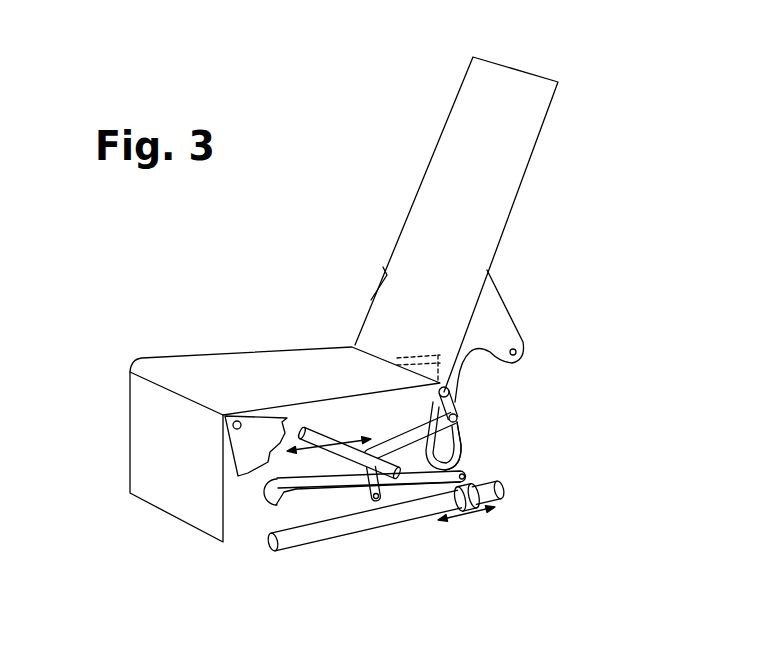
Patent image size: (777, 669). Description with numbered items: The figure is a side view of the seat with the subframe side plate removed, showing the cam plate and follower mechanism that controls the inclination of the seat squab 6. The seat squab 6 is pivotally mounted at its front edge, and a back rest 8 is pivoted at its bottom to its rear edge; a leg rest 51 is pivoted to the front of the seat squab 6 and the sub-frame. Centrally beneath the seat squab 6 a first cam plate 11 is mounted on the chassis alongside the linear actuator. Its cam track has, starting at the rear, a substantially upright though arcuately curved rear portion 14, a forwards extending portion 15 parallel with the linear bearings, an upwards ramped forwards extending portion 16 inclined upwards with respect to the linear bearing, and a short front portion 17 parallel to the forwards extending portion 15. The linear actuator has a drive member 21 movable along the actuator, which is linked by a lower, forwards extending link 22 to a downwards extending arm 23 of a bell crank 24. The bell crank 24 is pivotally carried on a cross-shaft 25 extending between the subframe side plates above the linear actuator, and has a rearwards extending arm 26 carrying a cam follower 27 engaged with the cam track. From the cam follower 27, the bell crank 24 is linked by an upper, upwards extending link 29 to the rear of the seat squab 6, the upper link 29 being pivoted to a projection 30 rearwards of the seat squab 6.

The back rest 8 is at (482, 163).
The projection 30 is at (420, 350).
The seat squab 6 is at (264, 378).
The leg rest 51 is at (168, 490).
The cross-shaft 25 is at (303, 437).
The rearwards extending arm 26 is at (402, 442).
The bell crank 24 is at (372, 418).
The downwards extending arm 23 is at (364, 493).
The short front portion 17 is at (273, 507).
The upwards ramped forwards extending portion 16 is at (312, 492).
The forwards extending portion 15 is at (382, 492).
The drive member 21 is at (472, 502).
The lower forwards extending link 22 is at (413, 494).
The upper upwards extending link 29 is at (452, 404).
The cam follower 27 is at (458, 418).
The first cam plate 11 is at (463, 443).
The rear portion 14 is at (468, 452).